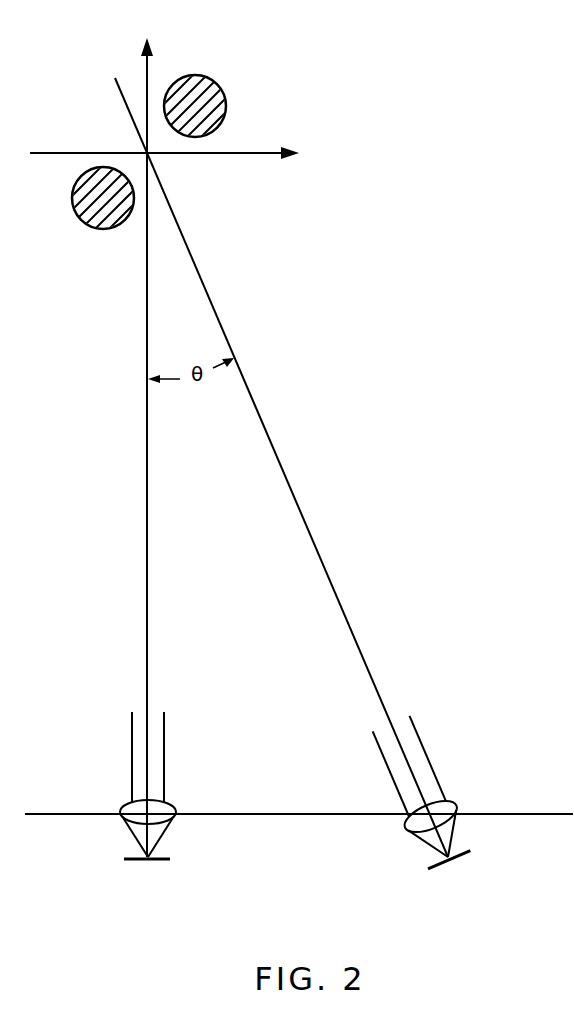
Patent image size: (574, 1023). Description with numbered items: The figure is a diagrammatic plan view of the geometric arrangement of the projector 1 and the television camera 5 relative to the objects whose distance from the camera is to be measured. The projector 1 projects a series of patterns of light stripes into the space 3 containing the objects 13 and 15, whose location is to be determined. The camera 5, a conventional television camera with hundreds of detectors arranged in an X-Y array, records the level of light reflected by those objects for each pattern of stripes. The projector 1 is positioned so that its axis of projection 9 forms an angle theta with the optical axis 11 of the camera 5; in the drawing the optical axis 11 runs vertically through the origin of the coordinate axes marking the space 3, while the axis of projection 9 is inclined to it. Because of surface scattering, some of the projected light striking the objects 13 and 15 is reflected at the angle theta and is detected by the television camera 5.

The projector 1 is at (463, 853).
The space 3 is at (64, 116).
The television camera 5 is at (162, 856).
The axis of projection 9 is at (270, 441).
The optical axis 11 is at (148, 515).
The object 13 is at (203, 77).
The object 15 is at (80, 220).